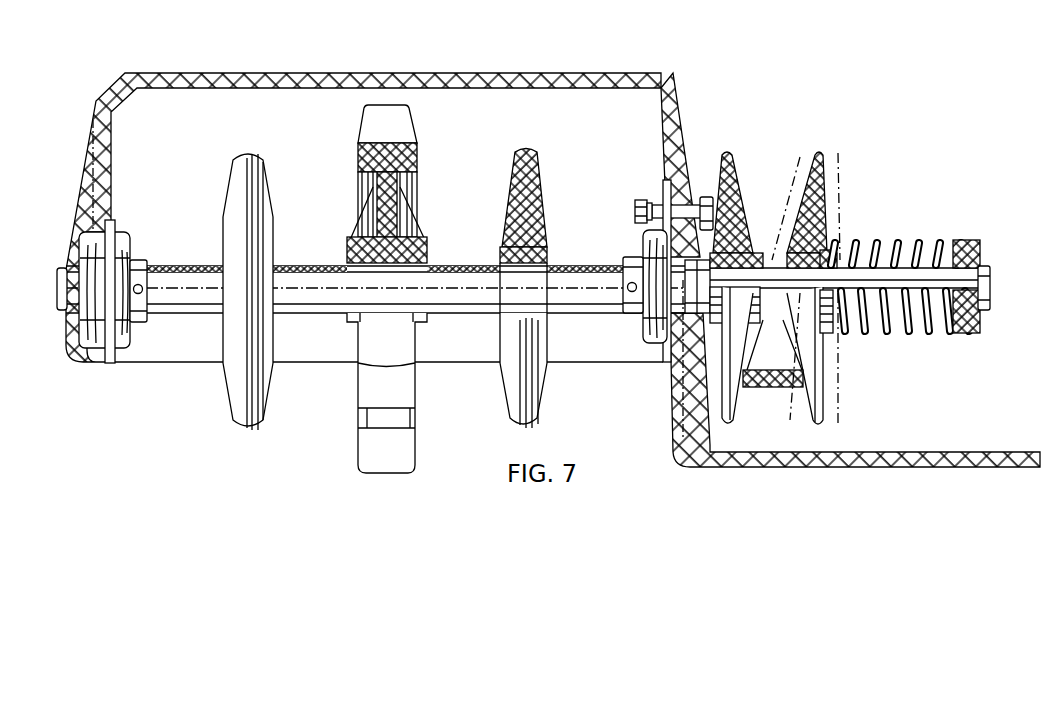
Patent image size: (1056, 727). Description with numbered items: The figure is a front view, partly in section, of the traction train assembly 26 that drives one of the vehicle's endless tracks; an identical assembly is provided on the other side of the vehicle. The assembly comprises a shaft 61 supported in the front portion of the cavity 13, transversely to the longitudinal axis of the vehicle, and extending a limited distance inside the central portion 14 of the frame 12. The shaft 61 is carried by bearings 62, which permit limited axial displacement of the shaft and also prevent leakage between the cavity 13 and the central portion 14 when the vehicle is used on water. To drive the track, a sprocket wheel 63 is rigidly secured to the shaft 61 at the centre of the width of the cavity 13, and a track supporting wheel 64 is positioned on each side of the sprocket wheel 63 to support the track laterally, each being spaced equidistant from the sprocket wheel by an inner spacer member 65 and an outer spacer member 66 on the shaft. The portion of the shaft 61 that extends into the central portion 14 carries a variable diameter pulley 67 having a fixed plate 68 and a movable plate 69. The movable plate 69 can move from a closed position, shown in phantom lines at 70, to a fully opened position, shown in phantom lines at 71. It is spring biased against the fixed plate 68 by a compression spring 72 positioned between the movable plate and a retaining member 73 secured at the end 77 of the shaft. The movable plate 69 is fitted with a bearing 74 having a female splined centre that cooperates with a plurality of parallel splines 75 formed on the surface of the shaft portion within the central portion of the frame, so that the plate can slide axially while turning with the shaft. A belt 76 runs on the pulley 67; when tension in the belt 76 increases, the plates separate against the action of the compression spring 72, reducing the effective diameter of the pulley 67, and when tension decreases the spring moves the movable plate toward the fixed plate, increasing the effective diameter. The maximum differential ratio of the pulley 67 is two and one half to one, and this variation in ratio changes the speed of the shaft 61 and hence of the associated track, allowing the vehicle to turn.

The frame 12 is at (765, 462).
The cavity 13 is at (298, 92).
The central portion 14 is at (897, 446).
The traction train assembly 26 is at (221, 464).
The shaft 61 is at (465, 267).
The bearings 62 is at (129, 322).
The sprocket wheel 63 is at (415, 394).
The track supporting wheel 64 is at (272, 412).
The inner spacer member 65 is at (311, 267).
The outer spacer member 66 is at (178, 266).
The variable diameter pulley 67 is at (848, 335).
The fixed plate 68 is at (730, 382).
The movable plate 69 is at (813, 421).
The closed position 70 is at (793, 170).
The fully opened position 71 is at (842, 178).
The compression spring 72 is at (947, 337).
The retaining member 73 is at (958, 250).
The bearing 74 is at (845, 248).
The splines 75 is at (902, 280).
The belt 76 is at (771, 390).
The end 77 is at (985, 290).